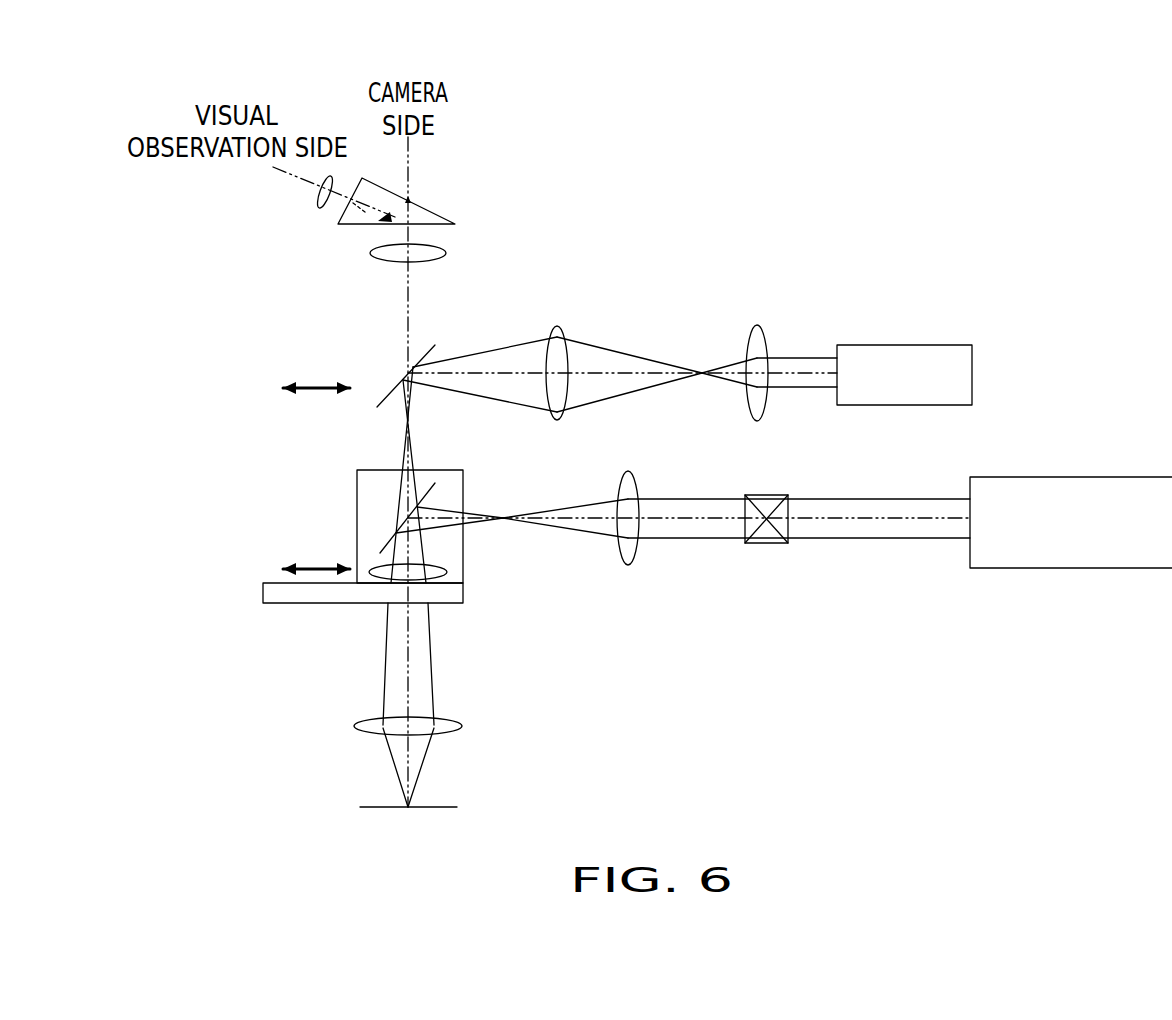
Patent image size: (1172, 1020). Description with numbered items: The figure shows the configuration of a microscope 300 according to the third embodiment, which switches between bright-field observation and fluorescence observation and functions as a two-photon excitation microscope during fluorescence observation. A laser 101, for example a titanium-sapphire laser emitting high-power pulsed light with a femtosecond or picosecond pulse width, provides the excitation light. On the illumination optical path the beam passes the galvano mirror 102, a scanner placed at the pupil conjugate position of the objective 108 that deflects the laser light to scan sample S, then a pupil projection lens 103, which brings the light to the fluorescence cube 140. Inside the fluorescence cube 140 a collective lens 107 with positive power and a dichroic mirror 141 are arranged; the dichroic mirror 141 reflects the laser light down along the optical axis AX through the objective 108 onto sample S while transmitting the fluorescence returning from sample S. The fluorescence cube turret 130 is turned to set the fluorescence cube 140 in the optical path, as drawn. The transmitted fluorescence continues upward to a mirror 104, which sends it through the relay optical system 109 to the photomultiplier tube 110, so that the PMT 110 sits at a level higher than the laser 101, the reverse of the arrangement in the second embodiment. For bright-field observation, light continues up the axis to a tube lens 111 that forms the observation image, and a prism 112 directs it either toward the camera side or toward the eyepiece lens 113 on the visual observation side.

The microscope 300 is at (1171, 47).
The laser 101 is at (1040, 477).
The galvano mirror 102 is at (768, 495).
The pupil projection lens 103 is at (630, 471).
The mirror 104 is at (385, 393).
The collective lens 107 is at (447, 571).
The objective 108 is at (368, 720).
The relay optical system 109 is at (820, 305).
The photomultiplier tube (PMT) 110 is at (870, 345).
The tube lens 111 is at (447, 253).
The prism 112 is at (428, 205).
The eyepiece lens 113 is at (323, 203).
The fluorescence cube turret 130 is at (263, 593).
The fluorescence cube 140 is at (357, 470).
The dichroic mirror 141 is at (382, 555).
The optical axis AX is at (408, 680).
The sample S is at (370, 806).